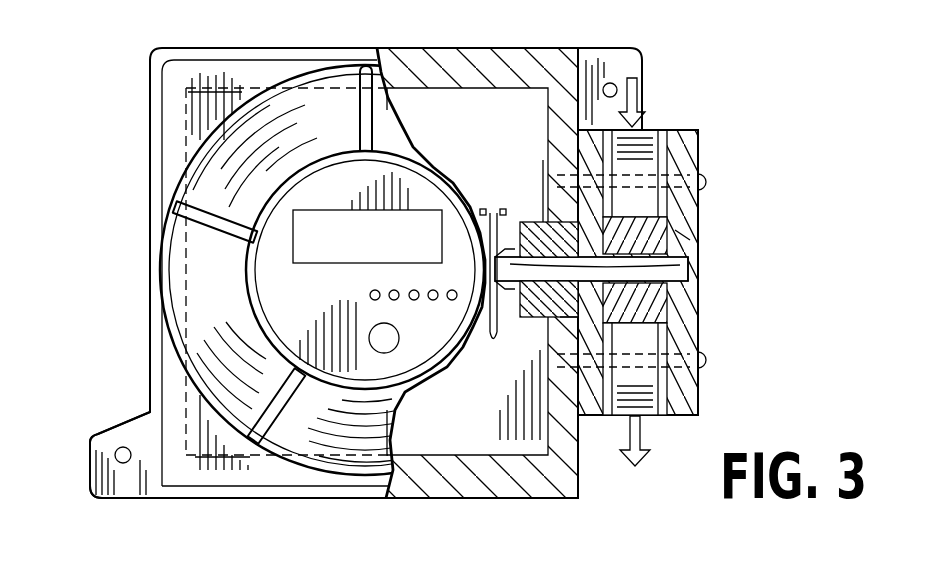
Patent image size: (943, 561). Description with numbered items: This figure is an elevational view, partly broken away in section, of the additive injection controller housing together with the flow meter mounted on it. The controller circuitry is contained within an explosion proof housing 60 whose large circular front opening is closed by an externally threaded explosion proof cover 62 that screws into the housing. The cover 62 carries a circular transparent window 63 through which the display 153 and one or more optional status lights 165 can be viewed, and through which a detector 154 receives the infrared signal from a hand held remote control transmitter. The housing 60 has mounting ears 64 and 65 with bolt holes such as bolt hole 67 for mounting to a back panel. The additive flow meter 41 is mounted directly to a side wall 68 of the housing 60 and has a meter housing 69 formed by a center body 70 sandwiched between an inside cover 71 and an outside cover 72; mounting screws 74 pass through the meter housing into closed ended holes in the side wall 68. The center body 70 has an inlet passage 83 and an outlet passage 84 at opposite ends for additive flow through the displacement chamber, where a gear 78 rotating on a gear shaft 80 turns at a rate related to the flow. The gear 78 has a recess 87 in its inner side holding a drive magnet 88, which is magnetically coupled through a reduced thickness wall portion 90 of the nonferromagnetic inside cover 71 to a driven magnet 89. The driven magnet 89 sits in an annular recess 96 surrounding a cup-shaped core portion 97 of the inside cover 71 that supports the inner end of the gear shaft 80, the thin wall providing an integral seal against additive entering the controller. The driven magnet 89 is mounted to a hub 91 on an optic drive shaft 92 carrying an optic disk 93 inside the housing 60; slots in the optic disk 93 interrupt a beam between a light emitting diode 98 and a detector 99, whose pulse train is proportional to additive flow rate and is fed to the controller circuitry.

The additive flow meter 41 is at (712, 140).
The explosion proof housing 60 is at (140, 110).
The explosion proof cover 62 is at (183, 358).
The transparent window 63 is at (293, 323).
The mounting ear 64 is at (625, 52).
The mounting ear 65 is at (92, 452).
The bolt hole 67 is at (131, 455).
The side wall 68 is at (553, 432).
The meter housing 69 is at (712, 386).
The center body 70 is at (692, 415).
The inside cover 71 is at (597, 400).
The outside cover 72 is at (680, 130).
The mounting screw 74 is at (706, 360).
The gear 78 is at (665, 249).
The gear shaft 80 is at (698, 268).
The inlet passage 83 is at (640, 130).
The outlet passage 84 is at (645, 416).
The recess 87 is at (662, 330).
The drive magnet 88 is at (632, 300).
The driven magnet 89 is at (542, 313).
The reduced thickness wall portion 90 is at (662, 245).
The hub 91 is at (533, 186).
The optic drive shaft 92 is at (522, 235).
The optic disk 93 is at (452, 354).
The annular recess 96 is at (562, 335).
The core portion 97 is at (675, 273).
The light emitting diode 98 is at (482, 208).
The detector 99 is at (503, 208).
The display 153 is at (340, 225).
The detector 154 is at (384, 324).
The status lights 165 is at (358, 293).